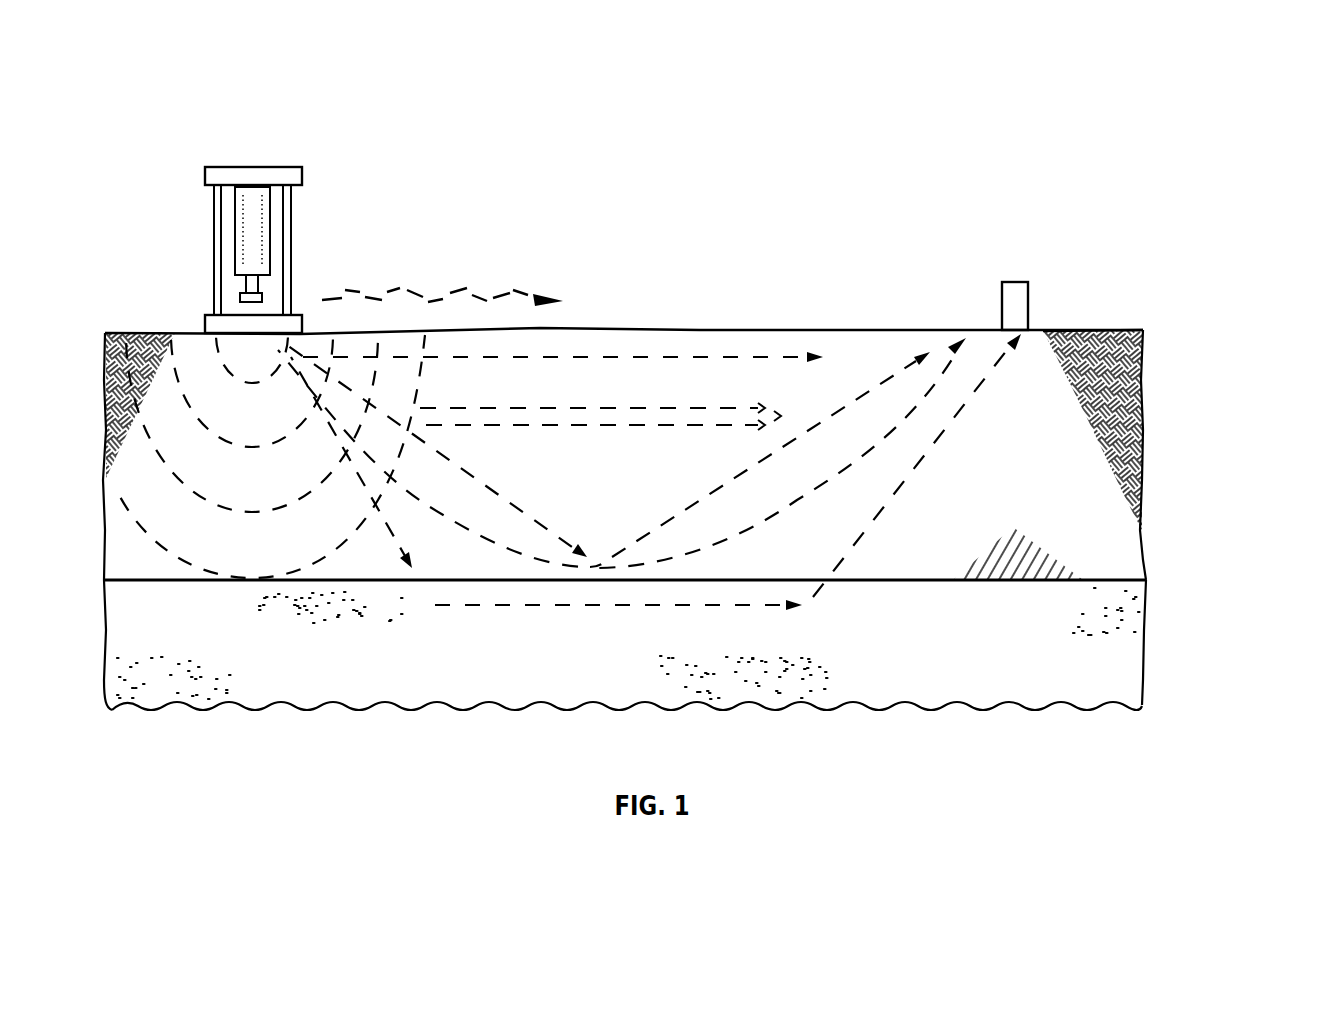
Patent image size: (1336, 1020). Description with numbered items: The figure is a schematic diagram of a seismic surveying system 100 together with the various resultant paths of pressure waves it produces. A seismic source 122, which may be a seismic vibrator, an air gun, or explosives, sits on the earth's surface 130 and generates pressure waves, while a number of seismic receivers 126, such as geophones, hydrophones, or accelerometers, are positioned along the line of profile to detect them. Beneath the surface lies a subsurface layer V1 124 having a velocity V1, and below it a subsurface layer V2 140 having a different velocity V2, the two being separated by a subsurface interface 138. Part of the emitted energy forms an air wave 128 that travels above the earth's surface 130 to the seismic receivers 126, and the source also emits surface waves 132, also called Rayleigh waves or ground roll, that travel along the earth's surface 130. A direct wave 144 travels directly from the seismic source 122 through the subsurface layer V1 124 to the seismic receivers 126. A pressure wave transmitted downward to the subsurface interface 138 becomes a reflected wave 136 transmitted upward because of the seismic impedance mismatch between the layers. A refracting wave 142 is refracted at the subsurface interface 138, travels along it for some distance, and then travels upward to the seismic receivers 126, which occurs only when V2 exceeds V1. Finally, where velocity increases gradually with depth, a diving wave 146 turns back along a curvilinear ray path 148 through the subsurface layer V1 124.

The seismic surveying system 100 is at (1022, 127).
The seismic source 122 is at (255, 166).
The subsurface layer V1 124 is at (1150, 449).
The seismic receivers 126 is at (1015, 281).
The air wave 128 is at (437, 297).
The earth's surface 130 is at (1092, 330).
The surface waves 132 is at (660, 356).
The reflected wave 136 is at (697, 503).
The subsurface interface 138 is at (877, 580).
The subsurface layer V2 140 is at (1153, 647).
The refracting wave 142 is at (585, 607).
The direct wave 144 is at (577, 428).
The diving wave 146 is at (845, 477).
The curvilinear ray path 148 is at (604, 551).